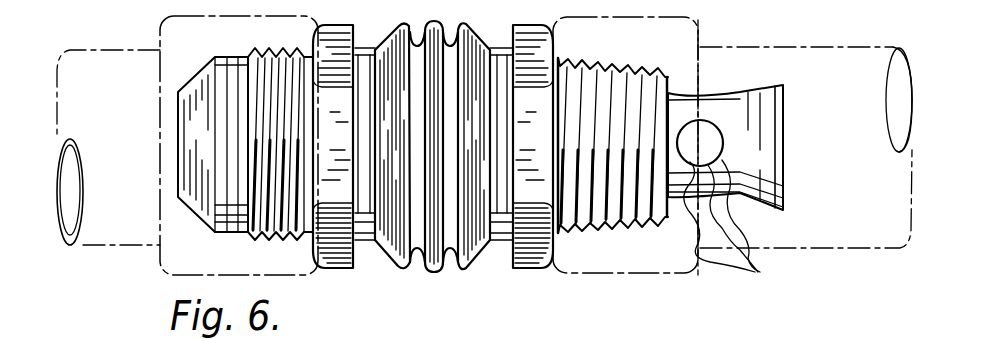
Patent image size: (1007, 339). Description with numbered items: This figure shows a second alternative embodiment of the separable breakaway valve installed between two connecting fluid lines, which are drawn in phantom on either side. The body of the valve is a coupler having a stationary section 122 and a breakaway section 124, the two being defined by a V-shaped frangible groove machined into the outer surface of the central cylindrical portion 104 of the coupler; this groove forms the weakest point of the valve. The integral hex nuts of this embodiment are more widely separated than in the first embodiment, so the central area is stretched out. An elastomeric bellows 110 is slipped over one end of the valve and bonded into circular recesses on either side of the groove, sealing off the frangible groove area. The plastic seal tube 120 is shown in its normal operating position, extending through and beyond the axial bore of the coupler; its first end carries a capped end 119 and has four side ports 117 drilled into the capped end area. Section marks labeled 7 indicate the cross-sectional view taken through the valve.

The section line 7- 7 is at (160, 142).
The central cylindrical portion 104 is at (432, 181).
The elastomeric bellows 110 is at (435, 272).
The side ports 117 is at (738, 152).
The capped end 119 is at (790, 115).
The plastic seal tube 120 is at (182, 108).
The stationary section 122 is at (670, 78).
The breakaway section 124 is at (250, 243).